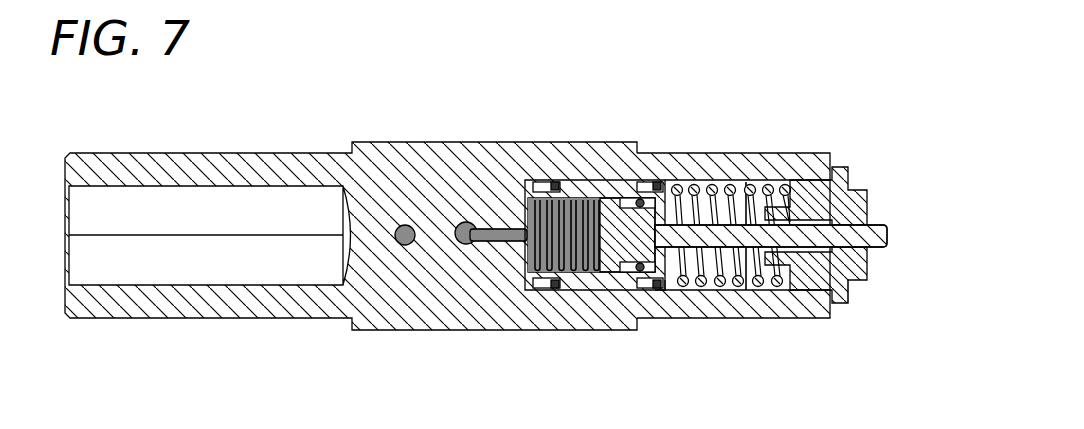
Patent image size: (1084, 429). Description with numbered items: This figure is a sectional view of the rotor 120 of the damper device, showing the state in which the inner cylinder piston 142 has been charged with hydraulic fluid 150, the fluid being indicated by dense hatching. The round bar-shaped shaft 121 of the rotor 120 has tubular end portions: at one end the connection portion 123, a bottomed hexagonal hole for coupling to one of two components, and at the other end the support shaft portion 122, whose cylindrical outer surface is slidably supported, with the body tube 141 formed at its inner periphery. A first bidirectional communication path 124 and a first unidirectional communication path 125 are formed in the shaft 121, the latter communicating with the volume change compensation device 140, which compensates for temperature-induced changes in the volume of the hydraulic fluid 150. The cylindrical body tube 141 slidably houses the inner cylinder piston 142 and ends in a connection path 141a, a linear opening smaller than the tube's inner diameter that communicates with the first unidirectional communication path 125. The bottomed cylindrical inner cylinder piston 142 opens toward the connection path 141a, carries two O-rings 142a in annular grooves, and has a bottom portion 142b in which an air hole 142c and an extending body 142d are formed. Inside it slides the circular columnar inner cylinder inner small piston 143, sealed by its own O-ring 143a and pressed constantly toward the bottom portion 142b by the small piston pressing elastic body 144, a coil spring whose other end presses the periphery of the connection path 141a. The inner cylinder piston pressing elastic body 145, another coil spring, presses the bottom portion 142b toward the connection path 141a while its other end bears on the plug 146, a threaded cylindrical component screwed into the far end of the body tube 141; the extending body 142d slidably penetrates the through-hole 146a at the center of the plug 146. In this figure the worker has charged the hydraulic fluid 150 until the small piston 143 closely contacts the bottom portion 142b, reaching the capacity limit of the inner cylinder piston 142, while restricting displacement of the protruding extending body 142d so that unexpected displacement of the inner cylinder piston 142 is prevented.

The rotor 120 is at (240, 132).
The shaft 121 is at (366, 142).
The support shaft portion 122 is at (696, 153).
The connection portion 123 is at (148, 285).
The first bidirectional communication path 124 is at (406, 246).
The first unidirectional communication path 125 is at (464, 222).
The volume change compensation device 140 is at (853, 162).
The body tube 141 is at (708, 290).
The connection path 141a is at (490, 242).
The inner cylinder piston 142 is at (540, 186).
The O-ring 142a is at (548, 288).
The bottom portion 142b is at (656, 182).
The air hole 142c is at (660, 292).
The extending body 142d is at (878, 226).
The inner cylinder inner small piston 143 is at (625, 198).
The O-ring 143a is at (637, 272).
The small piston pressing elastic body 144 is at (497, 229).
The inner cylinder piston pressing elastic body 145 is at (762, 292).
The plug 146 is at (870, 262).
The through-hole 146a is at (851, 252).
The hydraulic fluid 150 is at (405, 224).